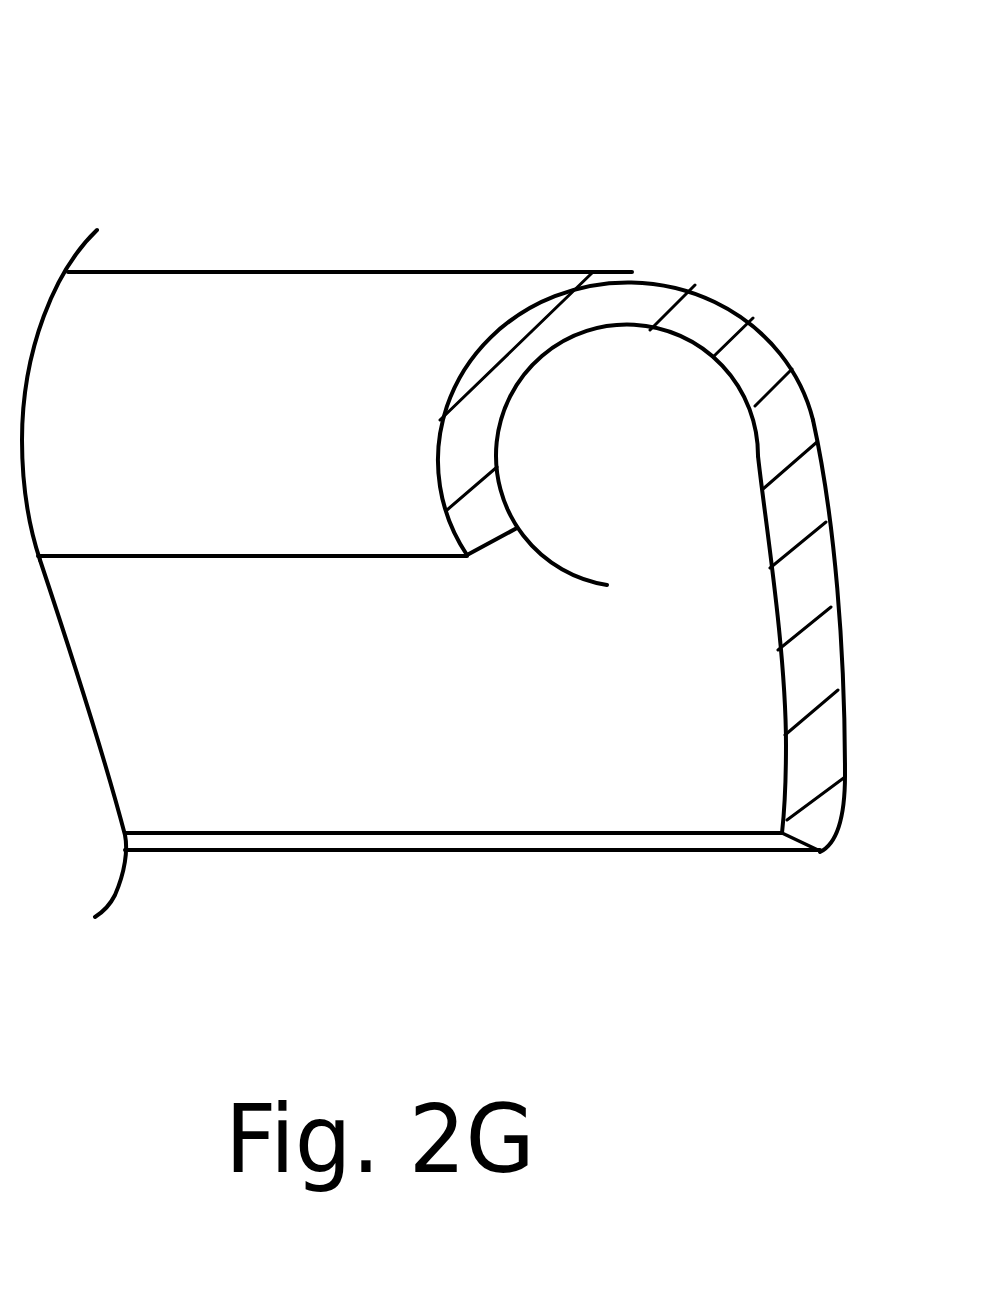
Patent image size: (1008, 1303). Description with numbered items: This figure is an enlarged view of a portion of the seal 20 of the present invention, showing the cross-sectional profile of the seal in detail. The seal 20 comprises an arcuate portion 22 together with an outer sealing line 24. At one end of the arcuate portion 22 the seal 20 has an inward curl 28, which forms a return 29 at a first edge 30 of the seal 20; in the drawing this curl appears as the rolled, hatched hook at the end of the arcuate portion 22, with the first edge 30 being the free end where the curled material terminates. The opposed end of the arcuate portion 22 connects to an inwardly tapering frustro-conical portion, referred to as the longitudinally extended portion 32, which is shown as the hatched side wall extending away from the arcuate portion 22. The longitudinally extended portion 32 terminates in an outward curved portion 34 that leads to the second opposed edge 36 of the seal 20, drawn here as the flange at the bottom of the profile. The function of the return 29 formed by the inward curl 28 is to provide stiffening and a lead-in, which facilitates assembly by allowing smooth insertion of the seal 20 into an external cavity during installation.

The seal 20 is at (273, 118).
The arcuate portion 22 is at (477, 270).
The outer sealing line 24 is at (257, 473).
The inward curl 28 is at (387, 532).
The return 29 is at (607, 585).
The first edge 30 is at (490, 545).
The longitudinally extended portion 32 is at (820, 477).
The outward curved portion 34 is at (472, 812).
The second opposed edge 36 is at (693, 853).